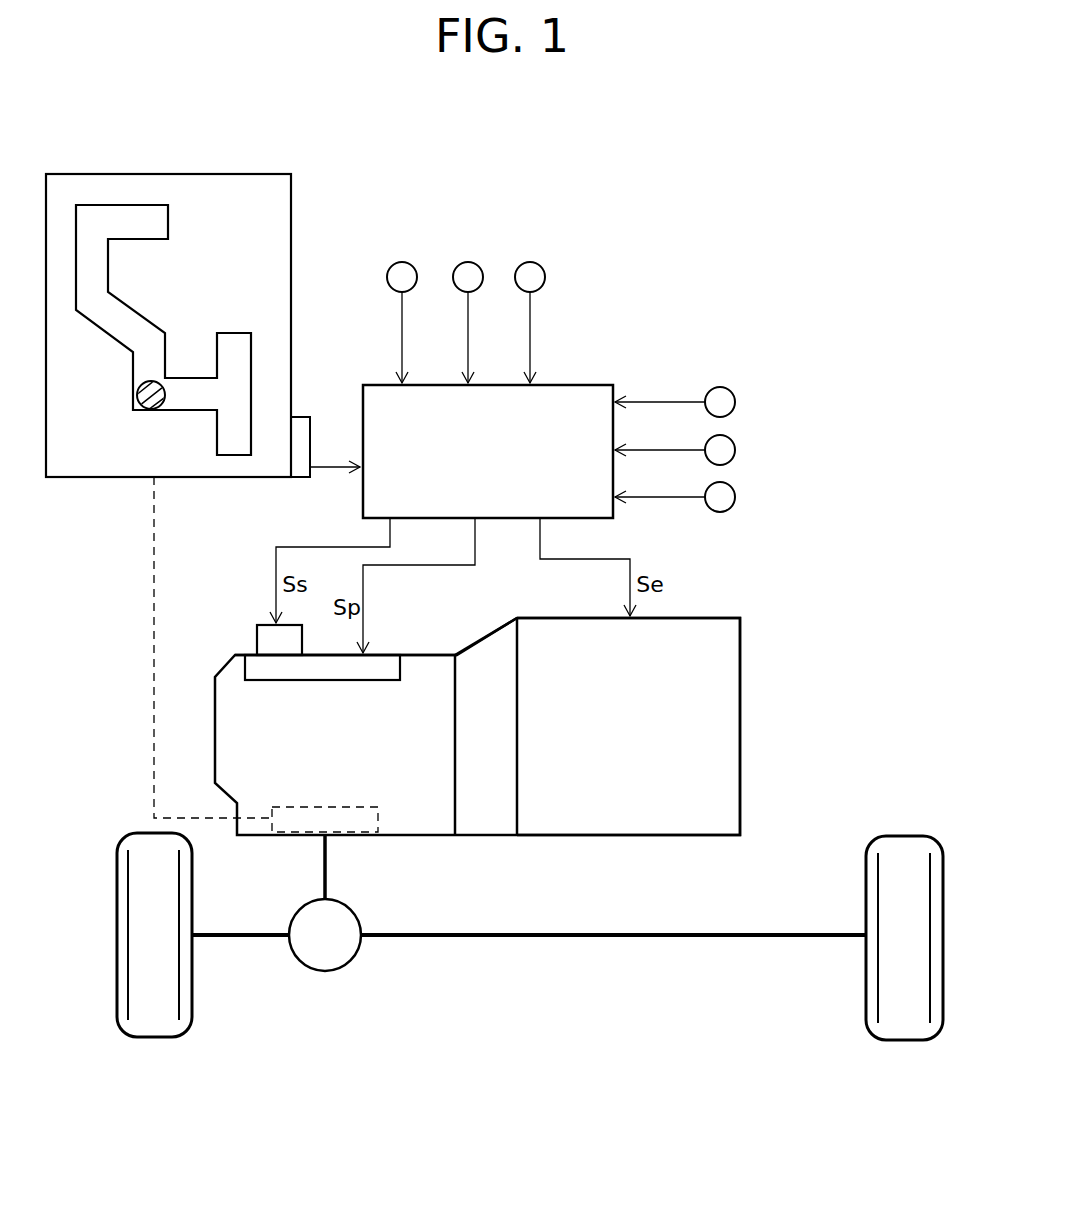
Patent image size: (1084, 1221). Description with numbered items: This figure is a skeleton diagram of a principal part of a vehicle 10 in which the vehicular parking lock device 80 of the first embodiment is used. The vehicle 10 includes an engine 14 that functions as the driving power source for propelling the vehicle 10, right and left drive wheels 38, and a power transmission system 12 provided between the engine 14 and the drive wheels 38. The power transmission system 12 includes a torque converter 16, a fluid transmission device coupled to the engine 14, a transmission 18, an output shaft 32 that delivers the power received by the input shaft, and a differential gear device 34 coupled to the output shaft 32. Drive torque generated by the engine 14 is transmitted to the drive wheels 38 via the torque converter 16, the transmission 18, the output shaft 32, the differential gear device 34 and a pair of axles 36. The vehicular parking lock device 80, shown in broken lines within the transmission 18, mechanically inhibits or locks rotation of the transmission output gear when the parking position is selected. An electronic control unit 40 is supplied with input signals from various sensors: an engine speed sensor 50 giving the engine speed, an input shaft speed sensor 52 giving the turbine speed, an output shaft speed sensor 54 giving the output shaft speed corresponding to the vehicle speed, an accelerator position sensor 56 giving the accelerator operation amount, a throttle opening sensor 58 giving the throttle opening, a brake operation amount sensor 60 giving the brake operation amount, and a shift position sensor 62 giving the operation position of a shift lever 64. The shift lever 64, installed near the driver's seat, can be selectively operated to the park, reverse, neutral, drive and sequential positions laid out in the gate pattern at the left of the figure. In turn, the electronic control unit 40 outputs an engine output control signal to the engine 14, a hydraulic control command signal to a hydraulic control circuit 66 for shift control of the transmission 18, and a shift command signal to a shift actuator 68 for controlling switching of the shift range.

The vehicle 10 is at (652, 226).
The power transmission system 12 is at (801, 595).
The engine 14 is at (575, 636).
The torque converter 16 is at (480, 670).
The transmission 18 is at (422, 670).
The output shaft 32 is at (330, 858).
The differential gear device 34 is at (327, 960).
The axles 36 is at (263, 938).
The drive wheels 38 is at (150, 1023).
The electronic control unit 40 is at (388, 393).
The engine speed sensor 50 is at (405, 268).
The input shaft speed sensor 52 is at (470, 268).
The output shaft speed sensor 54 is at (532, 268).
The accelerator position sensor 56 is at (727, 399).
The throttle opening sensor 58 is at (727, 447).
The brake operation amount sensor 60 is at (727, 495).
The shift position sensor 62 is at (300, 423).
The shift lever 64 is at (146, 410).
The hydraulic control circuit 66 is at (255, 667).
The shift actuator 68 is at (263, 637).
The vehicular parking lock device 80 is at (378, 820).